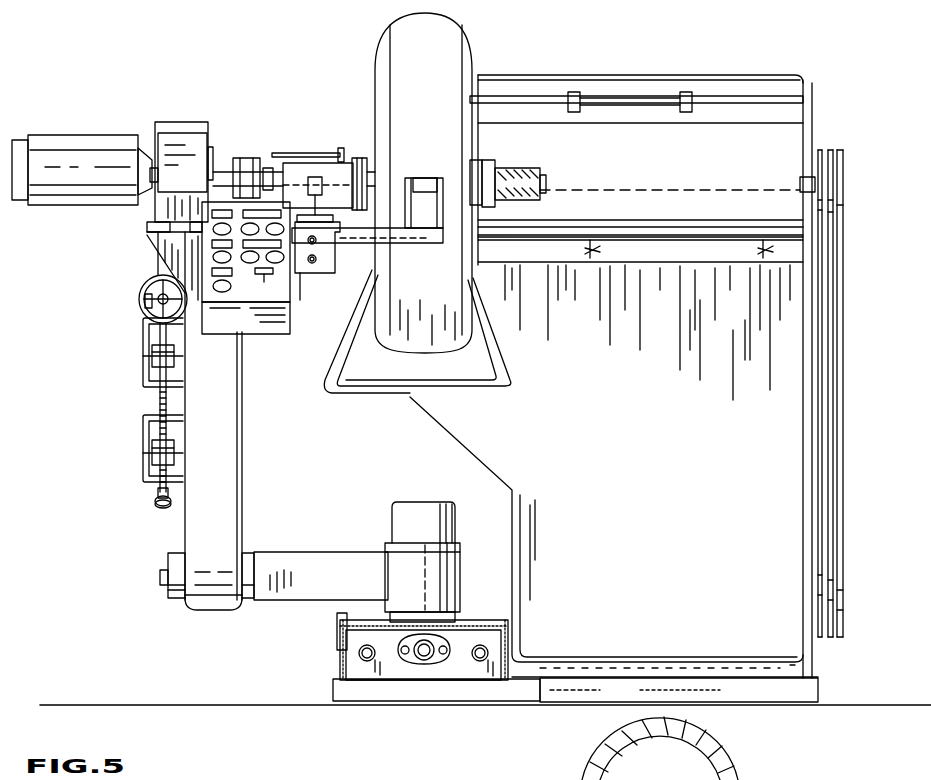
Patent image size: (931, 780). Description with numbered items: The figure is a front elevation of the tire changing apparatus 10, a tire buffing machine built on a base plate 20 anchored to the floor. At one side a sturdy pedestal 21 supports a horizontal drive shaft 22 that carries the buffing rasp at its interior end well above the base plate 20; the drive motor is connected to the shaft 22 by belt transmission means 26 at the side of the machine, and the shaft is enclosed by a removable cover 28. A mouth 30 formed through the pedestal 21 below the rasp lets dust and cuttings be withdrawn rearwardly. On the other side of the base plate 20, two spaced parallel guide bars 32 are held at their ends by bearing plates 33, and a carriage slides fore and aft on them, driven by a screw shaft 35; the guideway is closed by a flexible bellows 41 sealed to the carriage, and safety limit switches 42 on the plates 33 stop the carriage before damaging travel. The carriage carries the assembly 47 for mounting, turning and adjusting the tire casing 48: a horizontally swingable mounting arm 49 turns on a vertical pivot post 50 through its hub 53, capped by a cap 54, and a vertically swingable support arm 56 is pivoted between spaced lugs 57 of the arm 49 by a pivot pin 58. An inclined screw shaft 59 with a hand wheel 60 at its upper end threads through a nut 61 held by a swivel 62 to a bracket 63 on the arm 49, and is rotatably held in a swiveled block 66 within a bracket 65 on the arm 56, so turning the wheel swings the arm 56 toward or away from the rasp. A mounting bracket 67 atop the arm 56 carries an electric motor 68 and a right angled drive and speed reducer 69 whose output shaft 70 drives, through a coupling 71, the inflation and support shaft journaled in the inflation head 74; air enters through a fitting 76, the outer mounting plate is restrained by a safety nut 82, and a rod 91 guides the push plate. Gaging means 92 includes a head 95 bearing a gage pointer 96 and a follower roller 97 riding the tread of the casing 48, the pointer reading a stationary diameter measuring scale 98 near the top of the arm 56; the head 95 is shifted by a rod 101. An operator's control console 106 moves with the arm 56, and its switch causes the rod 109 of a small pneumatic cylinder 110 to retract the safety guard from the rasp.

The tire changing apparatus 10 is at (507, 770).
The base plate 20 is at (568, 692).
The pedestal 21 is at (614, 379).
The horizontal drive shaft 22 is at (812, 175).
The belt transmission means 26 is at (840, 465).
The removable cover 28 is at (640, 170).
The mouth 30 is at (480, 349).
The guide bars 32 is at (358, 656).
The bearing plates 33 is at (466, 684).
The screw shaft 35 is at (421, 665).
The flexible bellows 41 is at (470, 618).
The safety limit switches 42 is at (337, 630).
The assembly 47 is at (148, 257).
The tire casing 48 is at (395, 63).
The horizontally swingable mounting arm 49 is at (325, 560).
The vertical pivot post 50 is at (413, 614).
The hub 53 is at (440, 580).
The cap 54 is at (408, 512).
The vertically swingable support arm 56 is at (218, 458).
The spaced lugs 57 is at (247, 560).
The pivot pin 58 is at (160, 580).
The inclined screw shaft 59 is at (158, 400).
The hand wheel 60 is at (140, 293).
The nut 61 is at (152, 460).
The swivel 62 is at (183, 452).
The bracket 63 is at (142, 488).
The bracket 65 is at (143, 370).
The swiveled block 66 is at (176, 357).
The mounting bracket 67 is at (147, 233).
The electric motor 68 is at (63, 143).
The right angled drive and speed reducer 69 is at (183, 122).
The output shaft 70 is at (220, 172).
The coupling 71 is at (247, 158).
The inflation head 74 is at (330, 163).
The fitting 76 is at (315, 177).
The safety nut 82 is at (520, 205).
The rod 91 is at (280, 153).
The gaging means 92 is at (363, 254).
The head 95 is at (337, 253).
The gage pointer 96 is at (333, 203).
The follower roller 97 is at (428, 176).
The diameter measuring scale 98 is at (307, 222).
The rod 101 is at (306, 268).
The operator's control console 106 is at (245, 318).
The rod 109 is at (519, 96).
The pneumatic cylinder 110 is at (630, 95).